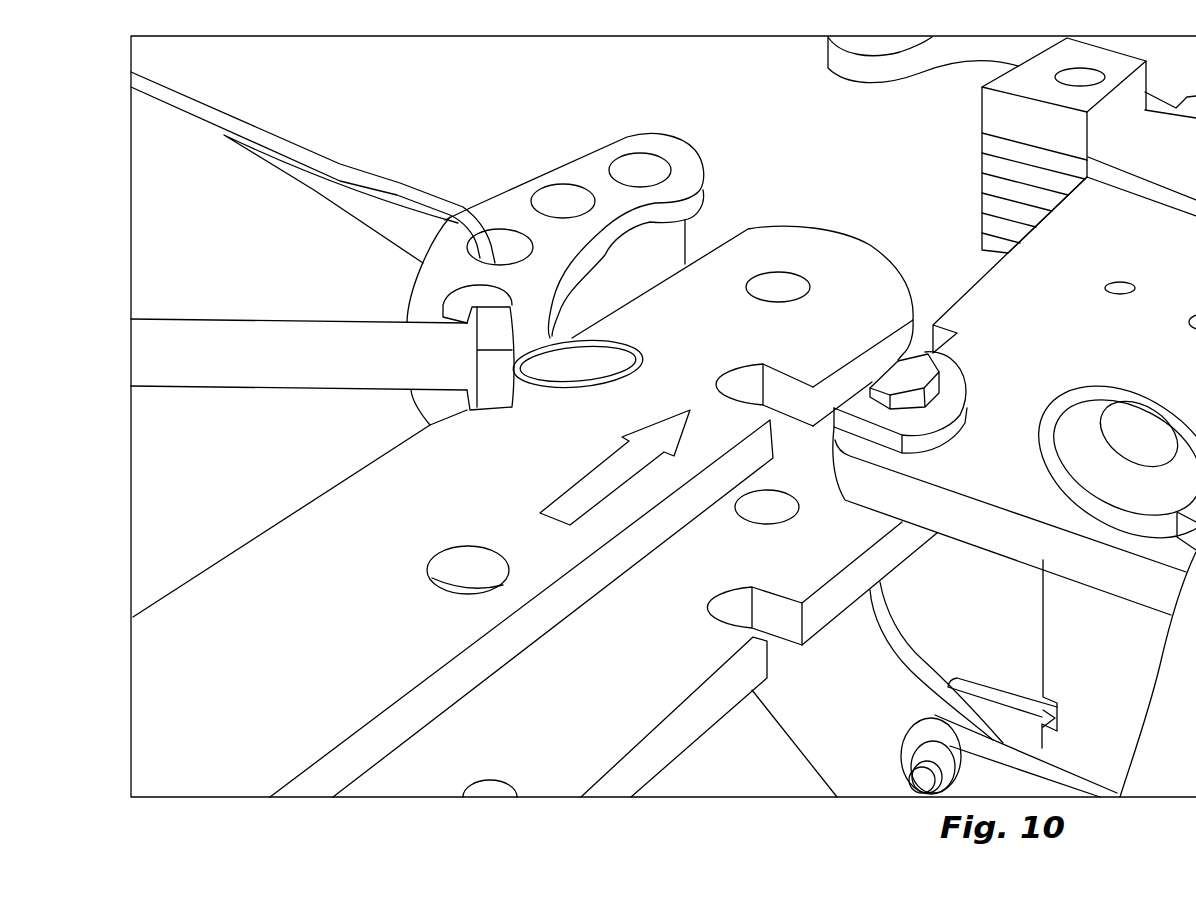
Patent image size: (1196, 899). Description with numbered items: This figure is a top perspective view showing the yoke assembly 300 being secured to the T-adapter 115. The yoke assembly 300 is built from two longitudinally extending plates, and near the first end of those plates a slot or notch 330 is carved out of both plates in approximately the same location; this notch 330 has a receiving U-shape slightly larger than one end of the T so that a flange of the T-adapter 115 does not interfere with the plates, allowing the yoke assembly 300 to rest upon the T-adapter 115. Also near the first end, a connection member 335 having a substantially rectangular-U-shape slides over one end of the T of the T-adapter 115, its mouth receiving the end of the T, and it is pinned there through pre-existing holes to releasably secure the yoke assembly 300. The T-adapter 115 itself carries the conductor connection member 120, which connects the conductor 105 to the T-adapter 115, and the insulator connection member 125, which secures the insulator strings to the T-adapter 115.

The conductor 105 is at (252, 135).
The conductor connection member 120 is at (593, 165).
The yoke assembly 300 is at (340, 543).
The notch 330 is at (762, 618).
The T-adapter 115 is at (1073, 324).
The connection member 335 is at (1178, 154).
The insulator connection member 125 is at (1093, 460).